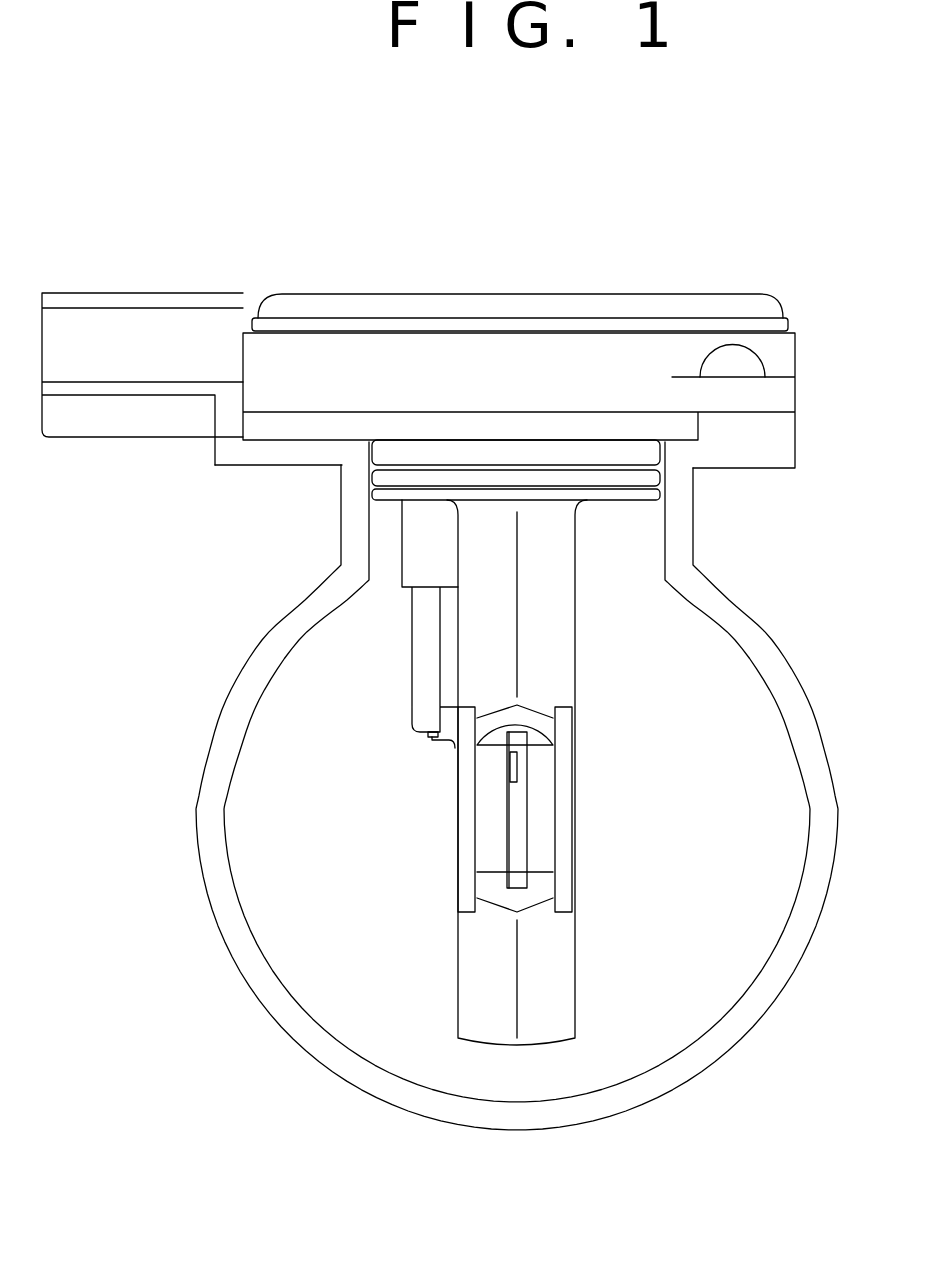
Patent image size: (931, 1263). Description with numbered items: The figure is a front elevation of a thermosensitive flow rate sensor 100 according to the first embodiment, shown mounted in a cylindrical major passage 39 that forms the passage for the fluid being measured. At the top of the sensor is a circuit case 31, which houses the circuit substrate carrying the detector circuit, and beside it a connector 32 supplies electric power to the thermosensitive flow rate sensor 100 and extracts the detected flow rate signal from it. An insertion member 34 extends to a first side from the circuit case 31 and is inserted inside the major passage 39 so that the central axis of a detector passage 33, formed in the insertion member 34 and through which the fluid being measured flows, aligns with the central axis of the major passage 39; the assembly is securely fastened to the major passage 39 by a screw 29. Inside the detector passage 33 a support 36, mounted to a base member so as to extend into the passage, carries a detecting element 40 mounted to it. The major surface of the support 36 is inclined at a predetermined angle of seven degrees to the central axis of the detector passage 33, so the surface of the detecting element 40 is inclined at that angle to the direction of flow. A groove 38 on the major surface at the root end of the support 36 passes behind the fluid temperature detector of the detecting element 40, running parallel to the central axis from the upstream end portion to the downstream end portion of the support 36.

The thermosensitive flow rate sensor 100 is at (266, 280).
The screw 29 is at (728, 352).
The circuit case 31 is at (508, 300).
The connector 32 is at (122, 437).
The detector passage 33 is at (548, 832).
The insertion member 34 is at (577, 677).
The support 36 is at (527, 805).
The groove 38 is at (515, 768).
The major passage 39 is at (752, 630).
The detecting element 40 is at (507, 803).